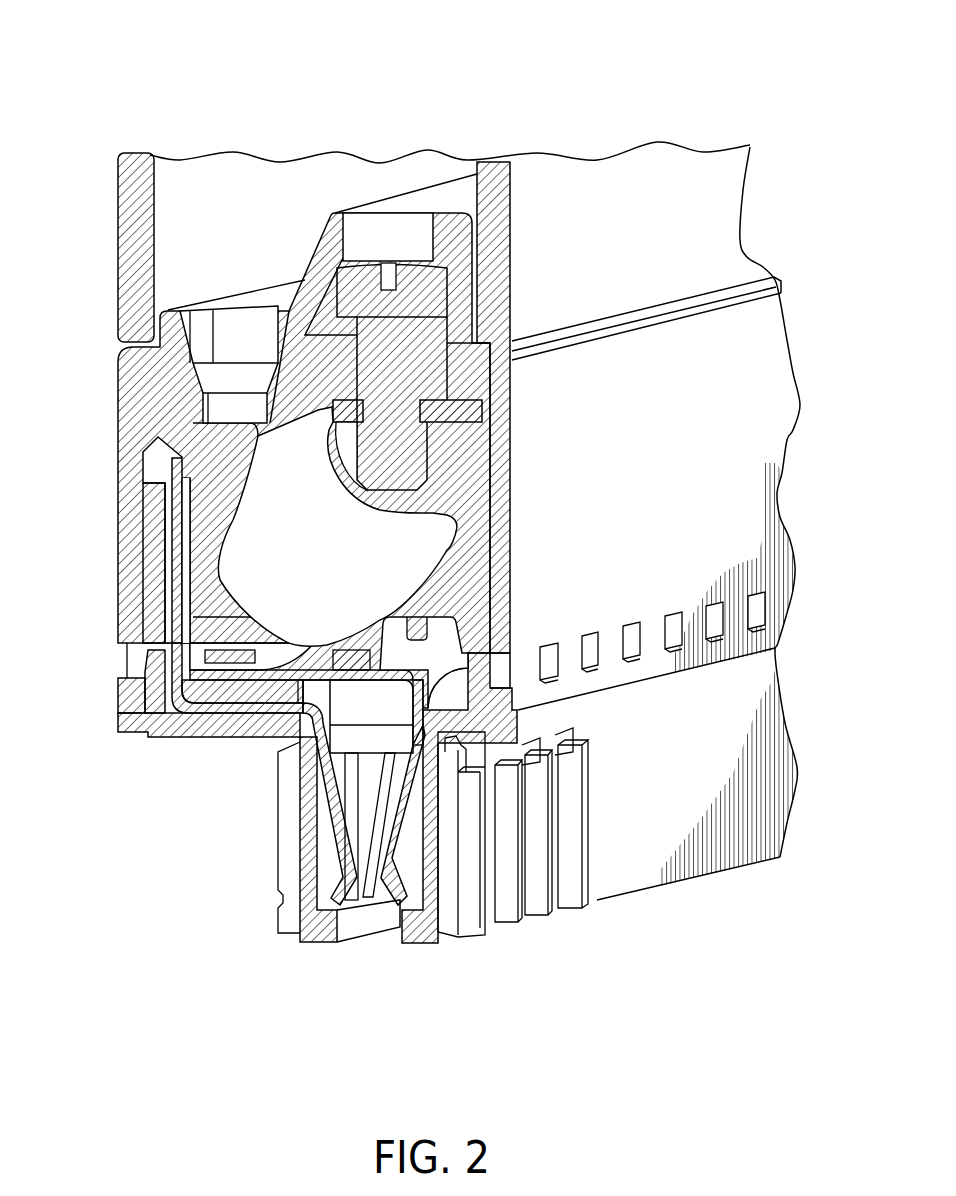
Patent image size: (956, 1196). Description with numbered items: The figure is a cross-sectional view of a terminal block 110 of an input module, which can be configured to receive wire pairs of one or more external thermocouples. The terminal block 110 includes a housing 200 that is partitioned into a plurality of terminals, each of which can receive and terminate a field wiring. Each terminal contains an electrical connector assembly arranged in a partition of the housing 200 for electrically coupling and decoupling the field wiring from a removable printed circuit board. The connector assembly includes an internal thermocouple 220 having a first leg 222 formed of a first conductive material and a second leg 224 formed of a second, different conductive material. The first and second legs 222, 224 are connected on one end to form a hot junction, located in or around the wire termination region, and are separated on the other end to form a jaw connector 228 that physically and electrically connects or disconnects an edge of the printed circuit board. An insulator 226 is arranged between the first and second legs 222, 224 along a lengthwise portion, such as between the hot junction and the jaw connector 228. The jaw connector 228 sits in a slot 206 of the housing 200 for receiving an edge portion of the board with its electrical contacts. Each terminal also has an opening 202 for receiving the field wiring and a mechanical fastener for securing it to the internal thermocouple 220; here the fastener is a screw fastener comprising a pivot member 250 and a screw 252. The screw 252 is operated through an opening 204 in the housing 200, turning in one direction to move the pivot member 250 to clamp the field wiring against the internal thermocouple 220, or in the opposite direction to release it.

The terminal block 110 is at (150, 128).
The housing 200 is at (725, 387).
The opening 202 is at (242, 360).
The opening 204 is at (388, 237).
The slot 206 is at (363, 942).
The internal thermocouple 220 is at (175, 563).
The first leg 222 is at (167, 595).
The second leg 224 is at (185, 637).
The insulator 226 is at (230, 687).
The jaw connector 228 is at (335, 838).
The pivot member 250 is at (282, 515).
The screw 252 is at (388, 347).